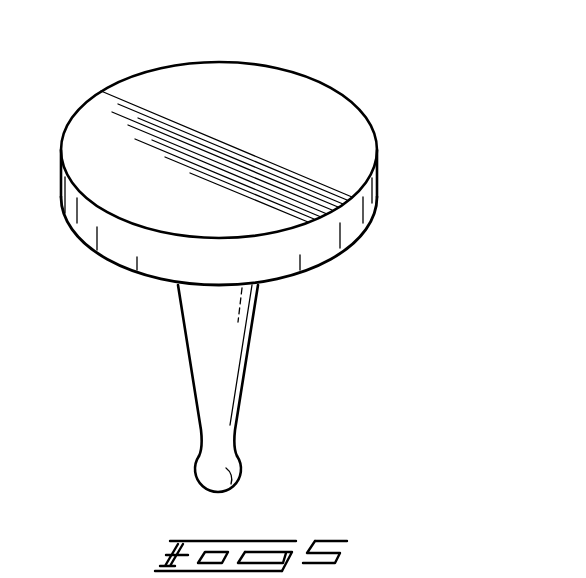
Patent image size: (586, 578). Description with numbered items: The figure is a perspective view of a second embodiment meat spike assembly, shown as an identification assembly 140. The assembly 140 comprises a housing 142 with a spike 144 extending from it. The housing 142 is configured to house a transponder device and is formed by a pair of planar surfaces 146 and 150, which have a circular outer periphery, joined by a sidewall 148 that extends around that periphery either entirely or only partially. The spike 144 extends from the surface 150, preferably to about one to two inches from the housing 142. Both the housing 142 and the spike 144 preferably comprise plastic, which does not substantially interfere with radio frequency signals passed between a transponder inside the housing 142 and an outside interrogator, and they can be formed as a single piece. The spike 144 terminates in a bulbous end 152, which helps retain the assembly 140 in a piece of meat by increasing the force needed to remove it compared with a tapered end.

The identification assembly 140 is at (289, 272).
The housing 142 is at (323, 63).
The spike 144 is at (254, 393).
The planar surface 146 is at (121, 203).
The sidewall 148 is at (130, 248).
The planar surface 150 is at (317, 272).
The bulbous end 152 is at (189, 483).